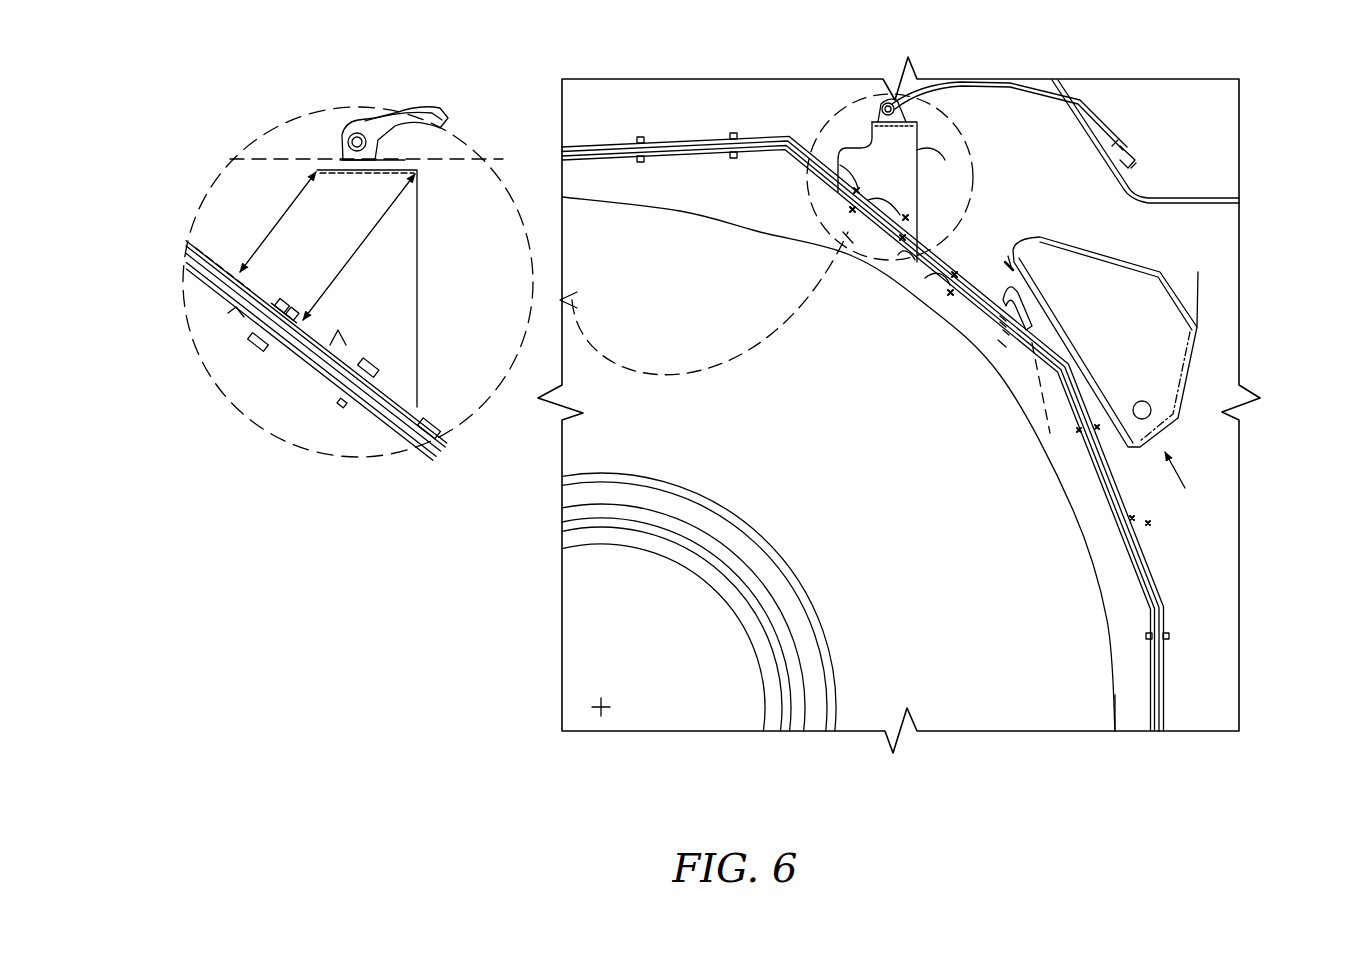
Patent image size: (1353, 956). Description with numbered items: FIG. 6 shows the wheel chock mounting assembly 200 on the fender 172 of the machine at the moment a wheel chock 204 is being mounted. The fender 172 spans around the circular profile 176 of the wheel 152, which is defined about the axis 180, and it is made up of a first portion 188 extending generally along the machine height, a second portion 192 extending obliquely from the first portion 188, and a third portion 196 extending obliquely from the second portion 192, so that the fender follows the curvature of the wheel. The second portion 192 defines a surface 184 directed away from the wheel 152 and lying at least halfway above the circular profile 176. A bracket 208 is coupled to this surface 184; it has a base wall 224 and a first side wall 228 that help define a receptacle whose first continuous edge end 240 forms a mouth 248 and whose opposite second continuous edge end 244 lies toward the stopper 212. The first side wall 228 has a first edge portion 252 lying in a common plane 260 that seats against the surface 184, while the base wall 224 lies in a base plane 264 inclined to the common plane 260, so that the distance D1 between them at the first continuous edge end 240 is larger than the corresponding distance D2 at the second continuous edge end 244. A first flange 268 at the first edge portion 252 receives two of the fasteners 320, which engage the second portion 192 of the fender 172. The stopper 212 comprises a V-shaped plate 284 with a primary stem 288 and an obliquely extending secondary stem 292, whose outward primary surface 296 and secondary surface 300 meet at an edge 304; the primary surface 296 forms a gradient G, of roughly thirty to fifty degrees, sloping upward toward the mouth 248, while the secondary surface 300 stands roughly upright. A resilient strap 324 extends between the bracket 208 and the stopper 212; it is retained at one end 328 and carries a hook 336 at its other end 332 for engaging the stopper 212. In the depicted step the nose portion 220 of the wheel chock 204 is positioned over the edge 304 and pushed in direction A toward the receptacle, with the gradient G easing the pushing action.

The wheel 152 is at (1035, 713).
The fender 172 is at (1165, 582).
The circular profile 176 is at (1117, 690).
The axis 180 is at (600, 712).
The surface 184 is at (936, 282).
The first portion 188 is at (1160, 578).
The second portion 192 is at (1012, 262).
The third portion 196 is at (762, 147).
The wheel chock mounting assembly 200 is at (948, 137).
The wheel chock 204 is at (1200, 372).
The bracket 208 is at (837, 140).
The stopper 212 is at (1026, 340).
The nose portion 220 is at (1202, 268).
The base wall 224 is at (441, 127).
The first side wall 228 is at (870, 250).
The first continuous edge end 240 is at (419, 292).
The second continuous edge end 244 is at (863, 127).
The mouth 248 is at (419, 353).
The first edge portion 252 is at (880, 185).
The common plane 260 is at (411, 422).
The base plane 264 is at (276, 159).
The first flange 268 is at (933, 137).
The V-shaped plate 284 is at (1075, 251).
The primary stem 288 is at (1003, 345).
The secondary stem 292 is at (1005, 332).
The primary surface 296 is at (1040, 335).
The secondary surface 300 is at (1000, 324).
The edge 304 is at (1000, 318).
The fasteners 320 is at (856, 186).
The strap 324 is at (1080, 103).
The one end 328 is at (890, 100).
The other end 332 is at (1115, 143).
The hook 336 is at (1134, 166).
The direction A is at (1188, 482).
The gradient G is at (1048, 440).
The distance D1 is at (359, 247).
The second distance D2 is at (278, 222).